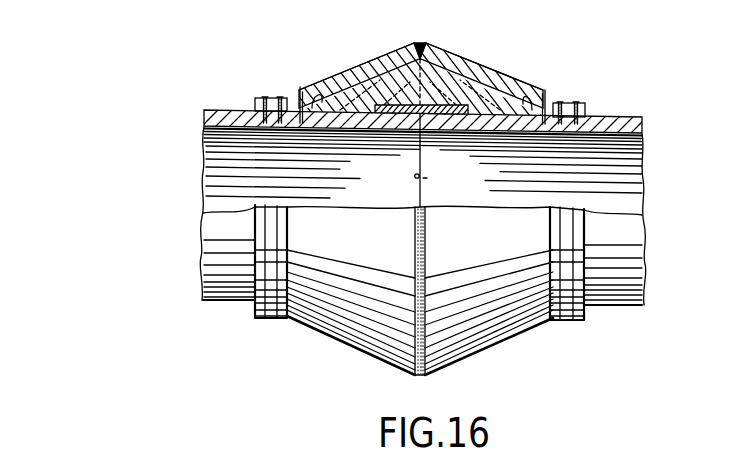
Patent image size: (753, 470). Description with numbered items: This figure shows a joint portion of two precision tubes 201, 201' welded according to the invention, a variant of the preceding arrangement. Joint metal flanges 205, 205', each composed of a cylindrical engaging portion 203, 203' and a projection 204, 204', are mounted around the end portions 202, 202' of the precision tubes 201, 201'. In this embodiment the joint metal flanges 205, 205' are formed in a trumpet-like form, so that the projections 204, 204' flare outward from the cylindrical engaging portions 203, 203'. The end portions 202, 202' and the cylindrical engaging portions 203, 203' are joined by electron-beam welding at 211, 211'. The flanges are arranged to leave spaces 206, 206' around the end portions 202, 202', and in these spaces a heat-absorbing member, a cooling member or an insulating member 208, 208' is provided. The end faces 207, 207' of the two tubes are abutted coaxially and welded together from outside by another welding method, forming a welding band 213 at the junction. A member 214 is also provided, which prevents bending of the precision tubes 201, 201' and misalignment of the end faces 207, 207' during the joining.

The precision tube 201 is at (403, 110).
The precision tube 201' is at (568, 113).
The end portion 202 is at (298, 93).
The end portion 202' is at (573, 89).
The cylindrical engaging portion 203 is at (251, 87).
The cylindrical engaging portion 203' is at (604, 94).
The projection 204 is at (350, 66).
The projection 204' is at (488, 77).
The joint metal flange 205 is at (356, 58).
The joint metal flange 205' is at (484, 49).
The space 206 is at (318, 75).
The space 206' is at (537, 84).
The end face 207 is at (395, 185).
The end face 207' is at (451, 185).
The heat-absorbing member, cooling member or insulating member 208 is at (382, 56).
The heat-absorbing member, cooling member or insulating member 208' is at (465, 64).
The electron-beam weld 211 is at (264, 84).
The electron-beam weld 211' is at (604, 84).
The welding band 213 is at (421, 44).
The member 214 is at (386, 109).